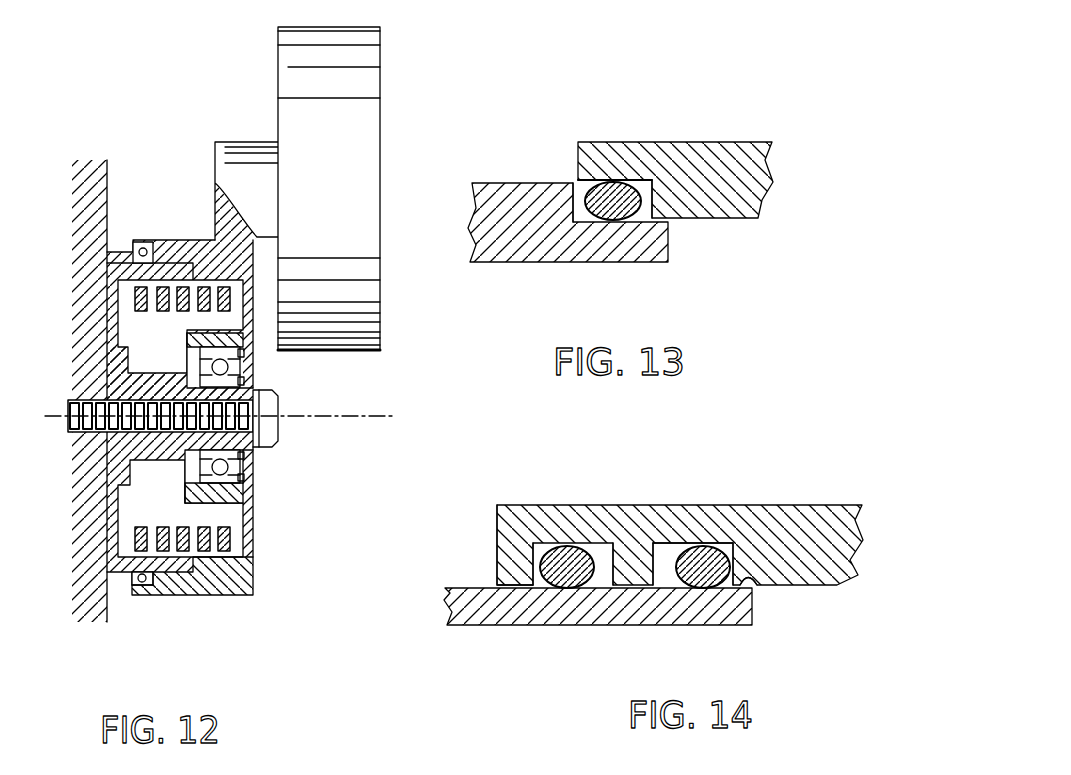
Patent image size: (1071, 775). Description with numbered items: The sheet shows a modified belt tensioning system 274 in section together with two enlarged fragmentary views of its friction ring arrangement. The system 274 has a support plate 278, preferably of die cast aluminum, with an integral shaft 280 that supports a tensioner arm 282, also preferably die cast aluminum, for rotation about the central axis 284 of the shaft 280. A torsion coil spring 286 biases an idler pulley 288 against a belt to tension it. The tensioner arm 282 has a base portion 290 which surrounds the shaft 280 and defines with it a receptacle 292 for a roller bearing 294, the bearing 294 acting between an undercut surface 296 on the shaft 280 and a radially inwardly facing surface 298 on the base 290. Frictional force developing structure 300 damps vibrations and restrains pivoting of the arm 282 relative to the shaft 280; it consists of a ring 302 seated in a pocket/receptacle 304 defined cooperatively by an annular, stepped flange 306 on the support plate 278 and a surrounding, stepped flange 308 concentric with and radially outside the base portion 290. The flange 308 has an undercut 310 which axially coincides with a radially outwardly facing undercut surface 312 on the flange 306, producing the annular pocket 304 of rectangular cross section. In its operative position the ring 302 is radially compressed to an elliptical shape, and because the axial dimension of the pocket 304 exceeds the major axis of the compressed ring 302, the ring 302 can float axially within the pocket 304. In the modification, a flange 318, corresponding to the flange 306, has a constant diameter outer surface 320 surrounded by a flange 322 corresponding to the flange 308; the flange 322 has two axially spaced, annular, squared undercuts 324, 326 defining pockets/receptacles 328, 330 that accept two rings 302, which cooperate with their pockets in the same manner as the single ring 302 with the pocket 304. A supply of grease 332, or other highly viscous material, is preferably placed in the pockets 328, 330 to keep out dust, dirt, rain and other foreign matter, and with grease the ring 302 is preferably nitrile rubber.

In FIG. 12, the modified belt tensioning system 274 is at (408, 102).
In FIG. 12, the support plate 278 is at (118, 468).
In FIG. 12, the shaft 280 is at (150, 387).
In FIG. 12, the tensioner arm 282 is at (213, 200).
In FIG. 12, the central axis 284 is at (346, 418).
In FIG. 12, the torsion coil spring 286 is at (133, 302).
In FIG. 12, the idler pulley 288 is at (345, 204).
In FIG. 12, the base portion 290 is at (228, 493).
In FIG. 12, the receptacle 292 is at (243, 468).
In FIG. 12, the roller bearing 294 is at (232, 367).
In FIG. 12, the undercut surface 296 is at (187, 490).
In FIG. 12, the radially inwardly facing surface 298 is at (150, 358).
In FIG. 12, the frictional force developing structure 300 is at (152, 604).
In FIG. 12, the ring 302 is at (147, 250).
In FIG. 13, the ring 302 is at (617, 212).
In FIG. 14, the ring 302 is at (572, 577).
In FIG. 12, the pocket/receptacle 304 is at (153, 252).
In FIG. 13, the pocket/receptacle 304 is at (652, 198).
In FIG. 12, the annular stepped flange 306 is at (143, 565).
In FIG. 13, the annular stepped flange 306 is at (553, 228).
In FIG. 12, the stepped flange 308 is at (178, 585).
In FIG. 13, the stepped flange 308 is at (620, 160).
In FIG. 12, the undercut 310 is at (120, 583).
In FIG. 13, the undercut 310 is at (650, 183).
In FIG. 12, the radially outwardly facing undercut surface 312 is at (162, 578).
In FIG. 13, the radially outwardly facing undercut surface 312 is at (575, 185).
In FIG. 14, the flange 318 is at (498, 607).
In FIG. 14, the constant diameter outer surface 320 is at (530, 562).
In FIG. 14, the flange 322 is at (802, 520).
In FIG. 14, the squared undercut 324 is at (612, 548).
In FIG. 14, the squared undercut 326 is at (737, 552).
In FIG. 14, the pocket/receptacle 328 is at (538, 547).
In FIG. 14, the pocket/receptacle 330 is at (740, 570).
In FIG. 14, the grease 332 is at (667, 547).